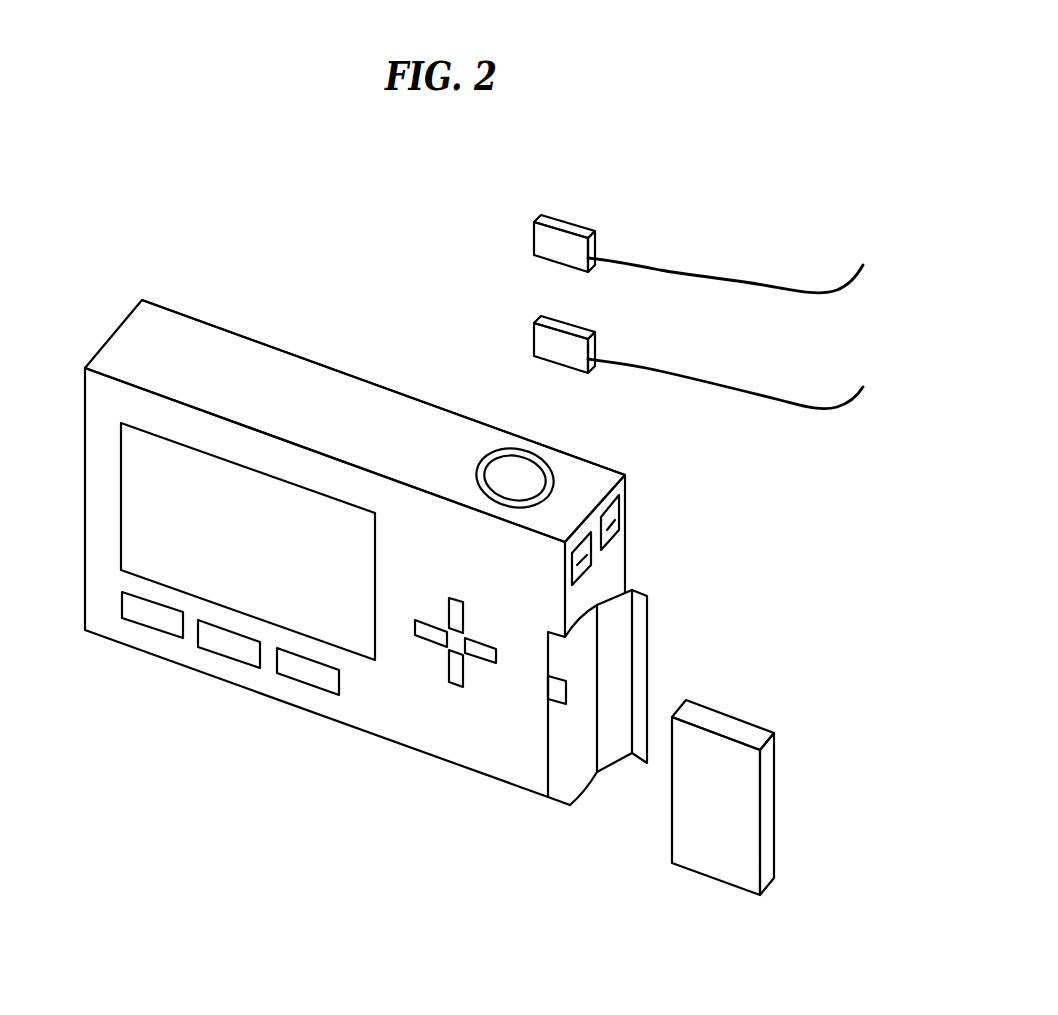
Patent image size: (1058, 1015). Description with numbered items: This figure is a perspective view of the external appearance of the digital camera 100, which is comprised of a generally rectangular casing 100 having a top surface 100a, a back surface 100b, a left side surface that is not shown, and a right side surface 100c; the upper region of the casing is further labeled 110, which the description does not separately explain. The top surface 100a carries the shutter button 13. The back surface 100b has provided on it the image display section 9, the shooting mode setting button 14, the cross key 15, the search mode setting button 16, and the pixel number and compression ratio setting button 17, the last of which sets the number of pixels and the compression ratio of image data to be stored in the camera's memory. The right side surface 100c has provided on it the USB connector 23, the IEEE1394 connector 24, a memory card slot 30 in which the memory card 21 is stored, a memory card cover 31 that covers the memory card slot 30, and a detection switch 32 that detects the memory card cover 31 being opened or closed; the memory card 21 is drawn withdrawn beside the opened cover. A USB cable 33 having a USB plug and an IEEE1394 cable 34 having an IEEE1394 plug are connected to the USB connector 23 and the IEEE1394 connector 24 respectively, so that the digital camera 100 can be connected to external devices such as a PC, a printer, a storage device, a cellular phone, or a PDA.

The digital camera 100 is at (413, 213).
The top surface 100a is at (250, 363).
The back surface 100b is at (88, 393).
The right side surface 100c is at (623, 487).
The housing top edge 110 is at (170, 325).
The image display section 9 is at (360, 640).
The shutter button 13 is at (527, 470).
The shooting mode setting button 14 is at (148, 613).
The cross key 15 is at (452, 680).
The search mode setting button 16 is at (228, 648).
The pixel number and compression ratio setting button 17 is at (302, 675).
The memory card 21 is at (740, 728).
The USB connector 23 is at (592, 560).
The IEEE1394 connector 24 is at (620, 527).
The memory card slot 30 is at (568, 778).
The memory card cover 31 is at (640, 627).
The detection switch 32 is at (555, 700).
The USB cable 33 is at (647, 375).
The IEEE1394 cable 34 is at (647, 267).